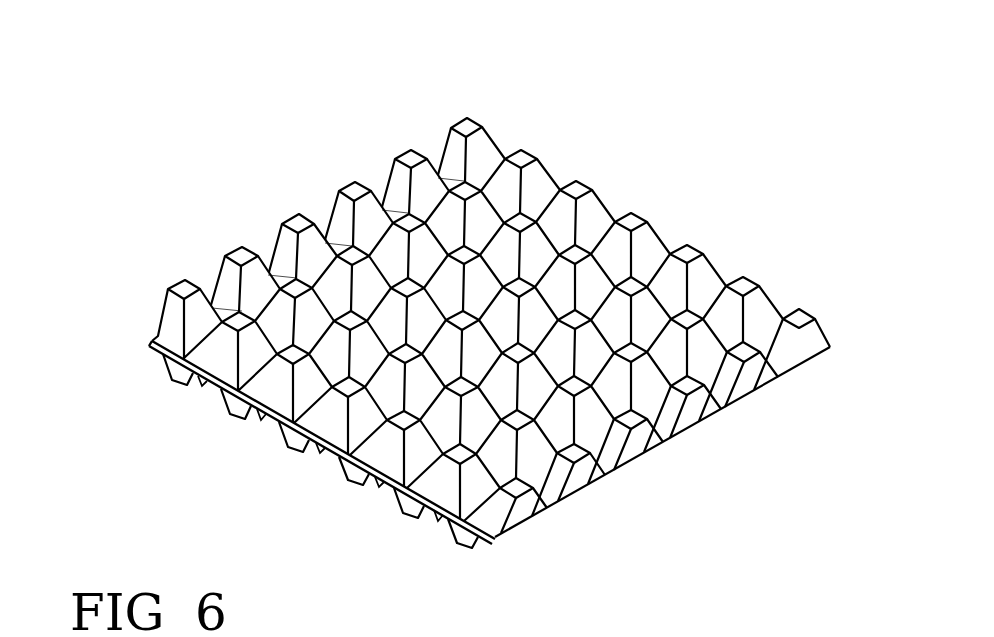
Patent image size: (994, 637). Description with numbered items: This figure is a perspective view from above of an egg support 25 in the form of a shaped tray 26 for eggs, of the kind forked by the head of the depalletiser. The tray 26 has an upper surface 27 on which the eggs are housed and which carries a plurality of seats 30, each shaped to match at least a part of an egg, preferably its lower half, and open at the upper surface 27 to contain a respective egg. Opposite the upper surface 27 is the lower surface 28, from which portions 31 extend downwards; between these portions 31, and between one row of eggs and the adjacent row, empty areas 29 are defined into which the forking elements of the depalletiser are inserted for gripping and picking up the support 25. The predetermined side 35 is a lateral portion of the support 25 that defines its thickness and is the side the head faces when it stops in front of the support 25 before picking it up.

The egg support 25 is at (476, 298).
The tray 26 is at (800, 375).
The upper surface 27 is at (288, 167).
The lower surface 28 is at (673, 462).
The empty areas 29 is at (203, 395).
The seats 30 is at (410, 207).
The portion 31 is at (290, 428).
The predetermined side 35 is at (366, 143).